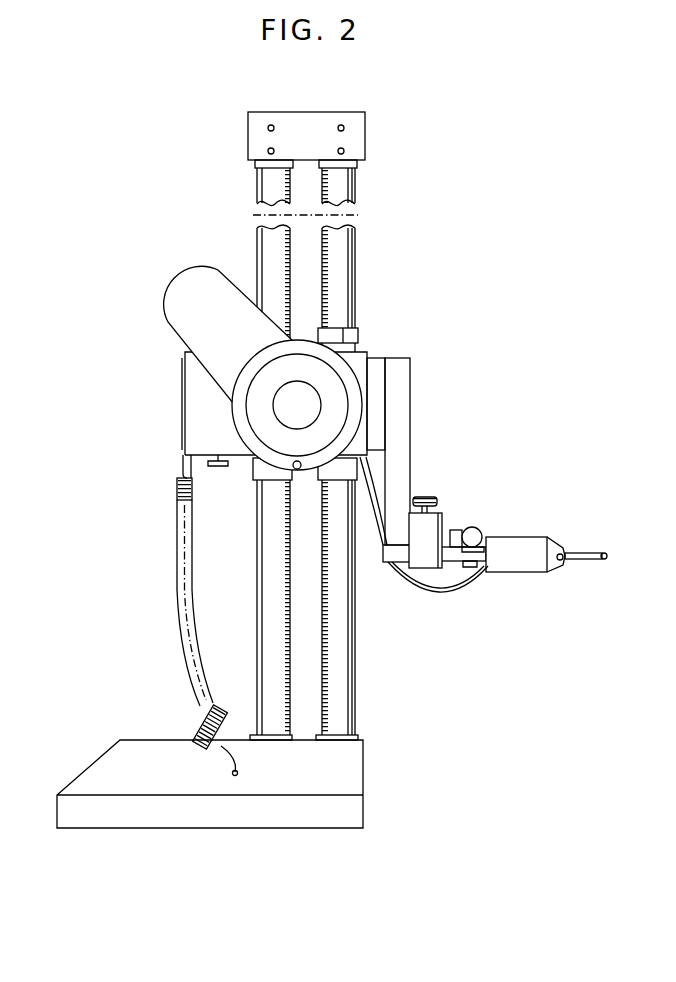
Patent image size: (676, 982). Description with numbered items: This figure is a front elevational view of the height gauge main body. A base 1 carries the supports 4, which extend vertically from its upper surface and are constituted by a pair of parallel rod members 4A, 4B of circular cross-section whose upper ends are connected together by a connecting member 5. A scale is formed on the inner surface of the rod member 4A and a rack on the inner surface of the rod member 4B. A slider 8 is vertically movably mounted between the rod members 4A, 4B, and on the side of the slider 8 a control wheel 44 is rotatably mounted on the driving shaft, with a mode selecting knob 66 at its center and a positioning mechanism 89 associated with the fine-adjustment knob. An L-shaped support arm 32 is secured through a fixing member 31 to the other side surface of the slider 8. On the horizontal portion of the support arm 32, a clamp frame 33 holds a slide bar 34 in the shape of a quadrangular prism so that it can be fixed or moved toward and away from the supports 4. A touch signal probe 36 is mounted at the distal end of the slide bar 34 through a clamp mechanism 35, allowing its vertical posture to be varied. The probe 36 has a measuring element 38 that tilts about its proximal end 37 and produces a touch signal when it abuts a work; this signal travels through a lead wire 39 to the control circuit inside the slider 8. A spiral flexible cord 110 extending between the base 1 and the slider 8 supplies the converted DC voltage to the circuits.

The base 1 is at (197, 829).
The supports 4 is at (348, 454).
The rod member 4A is at (355, 188).
The rod member 4B is at (283, 236).
The connecting member 5 is at (362, 128).
The slider 8 is at (183, 397).
The fixing member 31 is at (377, 362).
The support arm 32 is at (400, 402).
The clamp frame 33 is at (433, 512).
The slide bar 34 is at (388, 562).
The clamp mechanism 35 is at (478, 533).
The touch signal probe 36 is at (508, 572).
The proximal end 37 is at (556, 571).
The measuring element 38 is at (600, 561).
The lead wire 39 is at (450, 594).
The control wheel 44 is at (345, 366).
The mode selecting knob 66 is at (276, 410).
The positioning mechanism 89 is at (292, 467).
The spiral flexible cord 110 is at (200, 726).